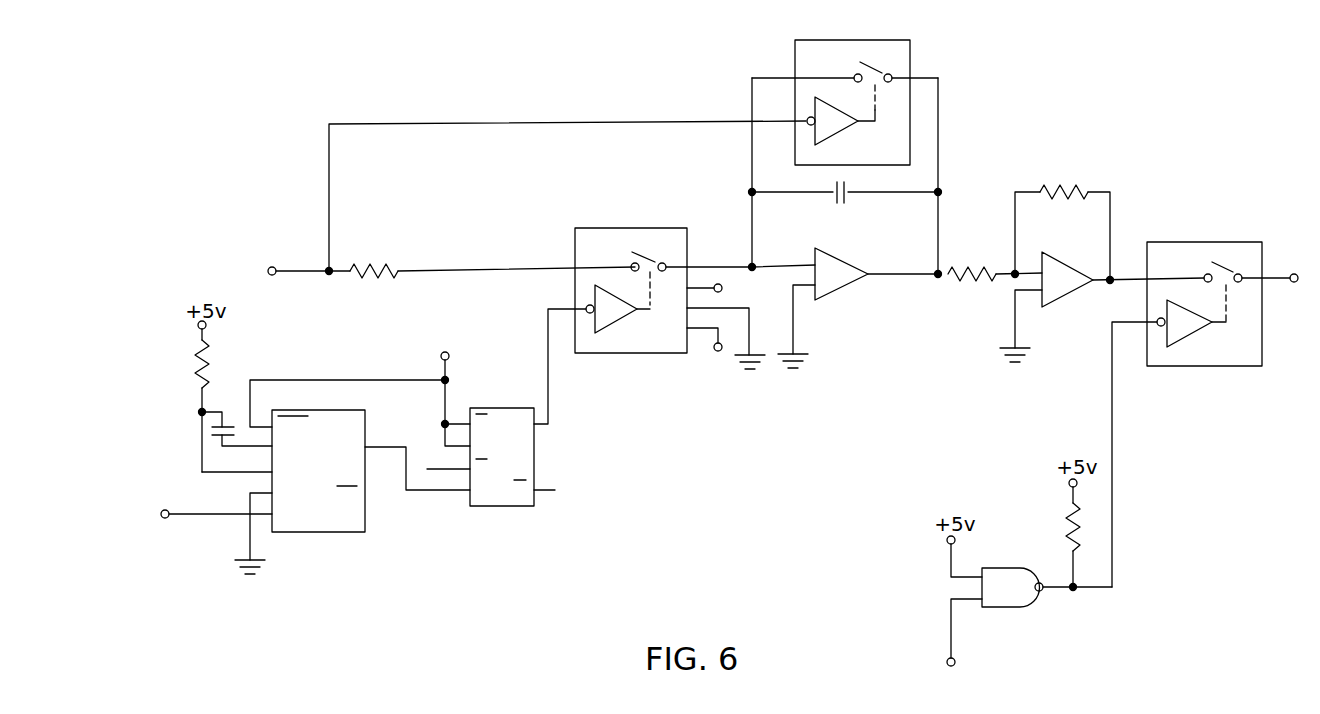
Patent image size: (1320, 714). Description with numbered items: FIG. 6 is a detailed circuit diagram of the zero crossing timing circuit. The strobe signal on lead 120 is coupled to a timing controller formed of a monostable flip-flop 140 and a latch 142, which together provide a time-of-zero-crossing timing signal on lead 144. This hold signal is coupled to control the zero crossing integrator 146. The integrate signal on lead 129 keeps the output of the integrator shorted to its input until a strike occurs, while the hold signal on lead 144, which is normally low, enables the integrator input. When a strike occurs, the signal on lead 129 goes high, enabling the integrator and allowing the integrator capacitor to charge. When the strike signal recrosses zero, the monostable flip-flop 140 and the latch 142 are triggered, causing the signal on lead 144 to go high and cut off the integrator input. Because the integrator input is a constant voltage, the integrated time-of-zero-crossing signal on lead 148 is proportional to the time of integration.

The lead 120 is at (183, 517).
The lead 129 is at (287, 268).
The monostable flip-flop 140 is at (312, 532).
The latch 142 is at (490, 506).
The lead 144 is at (548, 398).
The zero crossing integrator 146 is at (771, 247).
The lead 148 is at (1280, 273).